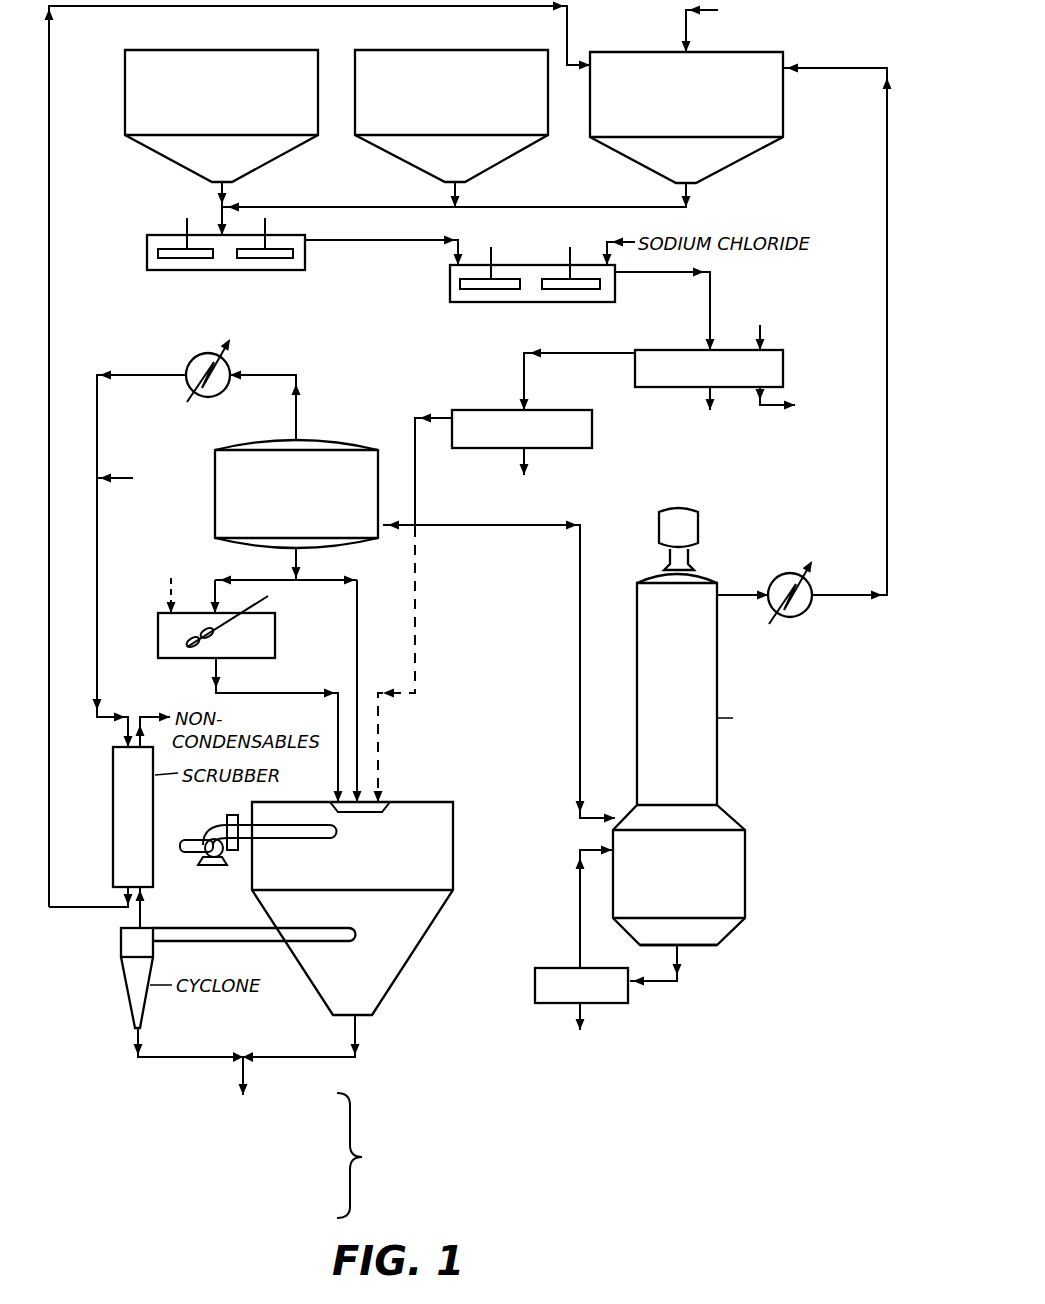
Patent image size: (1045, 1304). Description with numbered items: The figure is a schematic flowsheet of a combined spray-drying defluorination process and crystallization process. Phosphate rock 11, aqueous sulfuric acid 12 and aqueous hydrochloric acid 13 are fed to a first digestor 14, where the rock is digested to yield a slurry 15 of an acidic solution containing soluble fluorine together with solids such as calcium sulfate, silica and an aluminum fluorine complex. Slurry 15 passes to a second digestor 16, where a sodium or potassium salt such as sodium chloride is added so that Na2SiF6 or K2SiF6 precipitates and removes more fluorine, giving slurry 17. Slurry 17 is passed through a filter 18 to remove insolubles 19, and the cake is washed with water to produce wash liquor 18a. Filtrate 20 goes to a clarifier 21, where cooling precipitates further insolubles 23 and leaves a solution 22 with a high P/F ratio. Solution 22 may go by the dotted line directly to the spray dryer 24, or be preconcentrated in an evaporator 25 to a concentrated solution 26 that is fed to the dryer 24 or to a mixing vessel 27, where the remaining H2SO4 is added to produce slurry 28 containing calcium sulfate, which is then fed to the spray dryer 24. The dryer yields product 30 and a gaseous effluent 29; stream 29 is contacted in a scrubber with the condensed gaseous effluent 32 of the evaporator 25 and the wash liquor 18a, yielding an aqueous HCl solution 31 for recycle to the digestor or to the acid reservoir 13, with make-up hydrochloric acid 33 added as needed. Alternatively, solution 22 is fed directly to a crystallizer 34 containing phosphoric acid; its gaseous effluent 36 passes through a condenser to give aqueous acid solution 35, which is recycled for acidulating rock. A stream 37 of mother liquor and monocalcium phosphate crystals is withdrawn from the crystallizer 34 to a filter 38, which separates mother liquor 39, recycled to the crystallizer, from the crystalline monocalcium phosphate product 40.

The phosphate rock 11 is at (273, 50).
The aqueous sulfuric acid 12 is at (455, 50).
The aqueous hydrochloric acid 13 is at (778, 52).
The first digestor 14 is at (147, 240).
The slurry 15 is at (163, 263).
The second digestor 16 is at (450, 285).
The slurry 17 is at (488, 295).
The filter 18 is at (657, 350).
The wash liquor 18a is at (775, 405).
The insolubles 19 is at (708, 395).
The filtrate 20 is at (553, 356).
The clarifier 21 is at (490, 410).
The solution 22 is at (415, 467).
The insolubles 23 is at (524, 458).
The spray dryer 24 is at (455, 840).
The evaporator 25 is at (308, 440).
The concentrated solution 26 is at (333, 583).
The mixing vessel 27 is at (195, 660).
The slurry 28 is at (316, 690).
The gaseous effluent 29 is at (143, 913).
The product 30 is at (245, 1070).
The aqueous HCl solution 31 is at (49, 310).
The condensed gaseous effluent 32 is at (167, 374).
The make-up hydrochloric acid 33 is at (686, 26).
The crystallizer 34 is at (717, 770).
The aqueous acid solution 35 is at (887, 470).
The gaseous effluent 36 is at (735, 590).
The stream of mother liquor and crystals 37 is at (680, 960).
The filter 38 is at (537, 968).
The mother liquor 39 is at (580, 895).
The crystalline monocalcium phosphate product 40 is at (580, 1010).